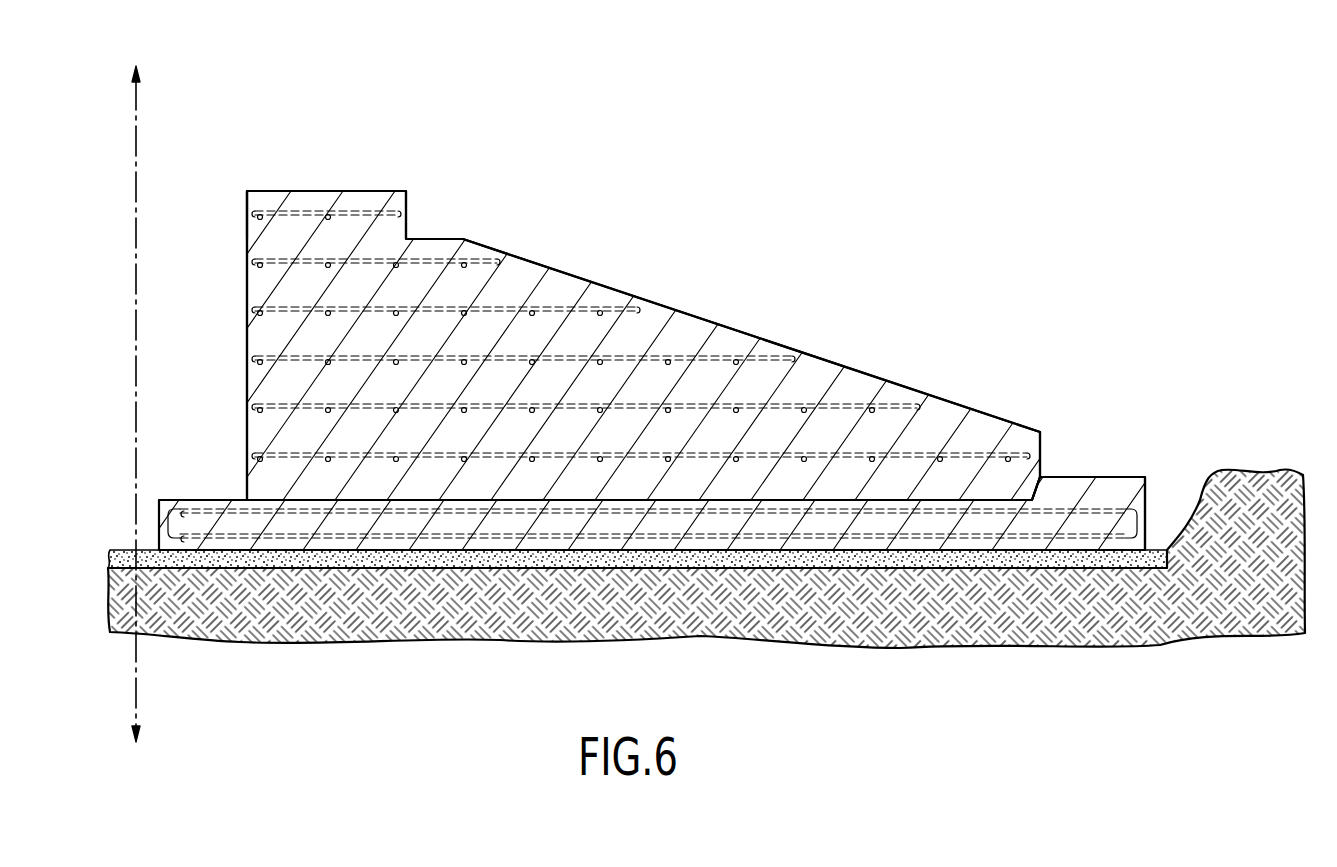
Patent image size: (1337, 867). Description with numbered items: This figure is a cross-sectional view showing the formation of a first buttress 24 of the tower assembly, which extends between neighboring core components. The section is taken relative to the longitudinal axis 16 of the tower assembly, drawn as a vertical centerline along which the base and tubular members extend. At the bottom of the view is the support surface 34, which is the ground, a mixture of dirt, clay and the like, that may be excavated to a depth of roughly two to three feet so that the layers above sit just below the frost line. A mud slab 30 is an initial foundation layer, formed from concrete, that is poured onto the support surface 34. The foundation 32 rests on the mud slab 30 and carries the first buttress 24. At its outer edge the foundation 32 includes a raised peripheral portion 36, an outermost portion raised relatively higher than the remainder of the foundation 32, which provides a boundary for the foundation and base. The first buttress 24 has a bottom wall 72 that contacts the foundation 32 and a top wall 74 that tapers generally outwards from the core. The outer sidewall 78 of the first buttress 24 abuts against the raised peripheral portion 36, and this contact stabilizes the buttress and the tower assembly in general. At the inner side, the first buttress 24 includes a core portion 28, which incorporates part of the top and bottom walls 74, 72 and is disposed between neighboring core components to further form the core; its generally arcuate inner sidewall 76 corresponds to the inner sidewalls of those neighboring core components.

The longitudinal axis 16 is at (136, 106).
The first buttress 24 is at (658, 242).
The core portion 28 is at (348, 172).
The top wall 74 is at (707, 321).
The inner sidewall 76 is at (247, 306).
The outer sidewall 78 is at (1045, 445).
The bottom wall 72 is at (675, 502).
The raised peripheral portion 36 is at (1078, 482).
The foundation 32 is at (1118, 486).
The mud slab 30 is at (1162, 527).
The support surface 34 is at (1298, 458).